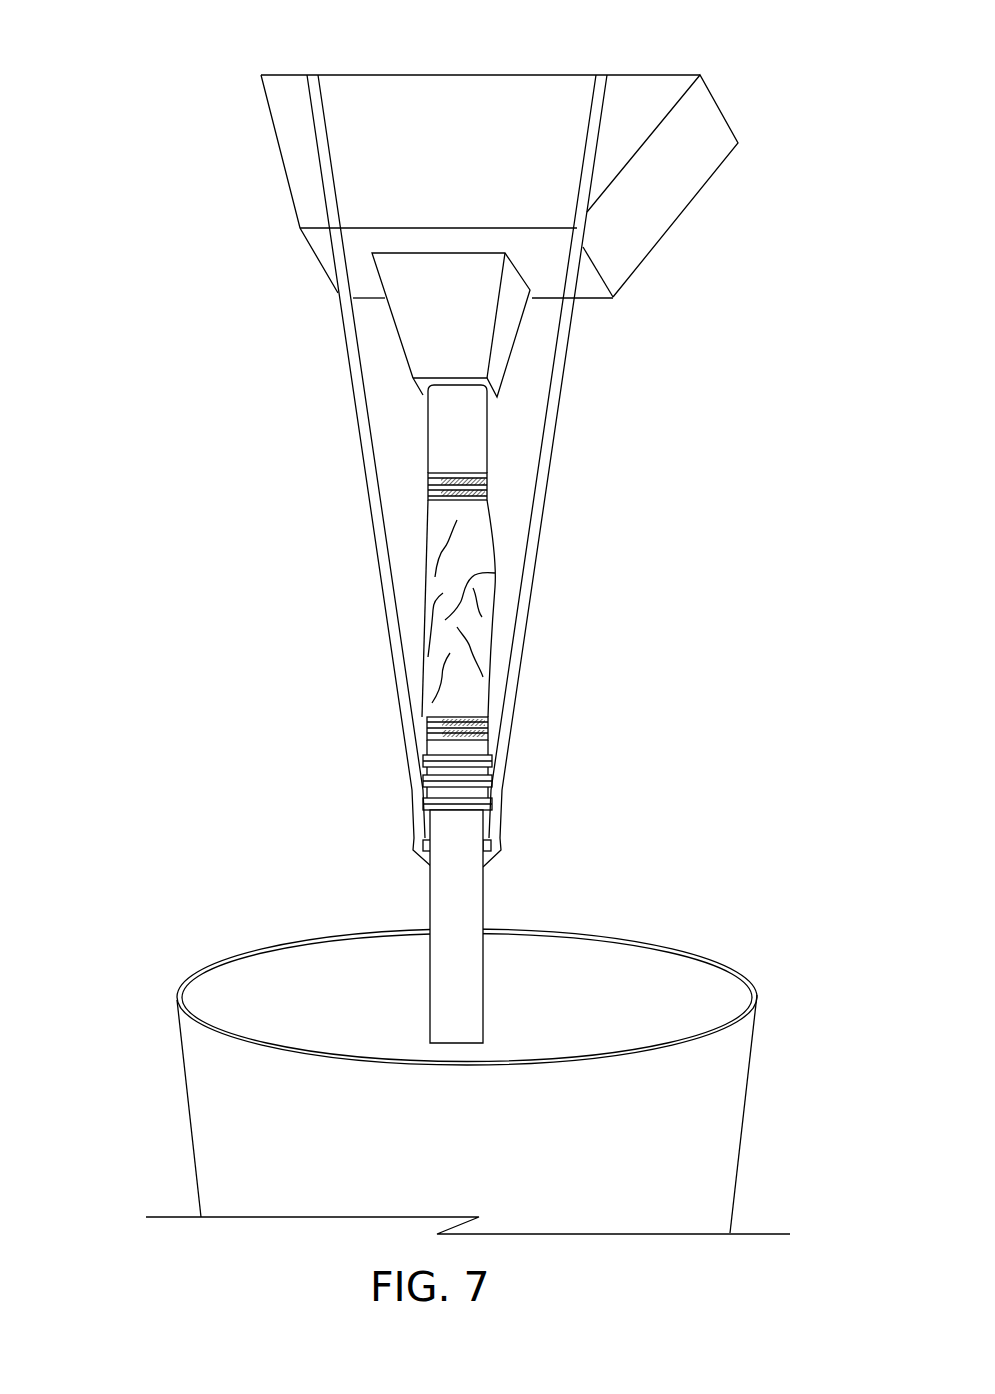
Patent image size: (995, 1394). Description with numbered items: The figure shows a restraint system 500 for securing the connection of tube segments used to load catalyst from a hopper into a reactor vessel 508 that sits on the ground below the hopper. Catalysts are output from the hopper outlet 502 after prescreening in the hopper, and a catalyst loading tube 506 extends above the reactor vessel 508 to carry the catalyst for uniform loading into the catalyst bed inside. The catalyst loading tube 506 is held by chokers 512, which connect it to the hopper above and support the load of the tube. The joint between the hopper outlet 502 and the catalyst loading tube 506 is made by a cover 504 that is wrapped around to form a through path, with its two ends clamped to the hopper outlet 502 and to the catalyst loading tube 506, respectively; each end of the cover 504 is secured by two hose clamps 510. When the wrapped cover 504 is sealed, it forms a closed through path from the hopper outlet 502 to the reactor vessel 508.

The restraint system 500 is at (186, 62).
The hopper outlet 502 is at (477, 445).
The cover 504 is at (425, 592).
The catalyst loading tube 506 is at (485, 991).
The reactor vessel 508 is at (307, 1117).
The hose clamps 510 is at (487, 492).
The chokers 512 is at (407, 752).